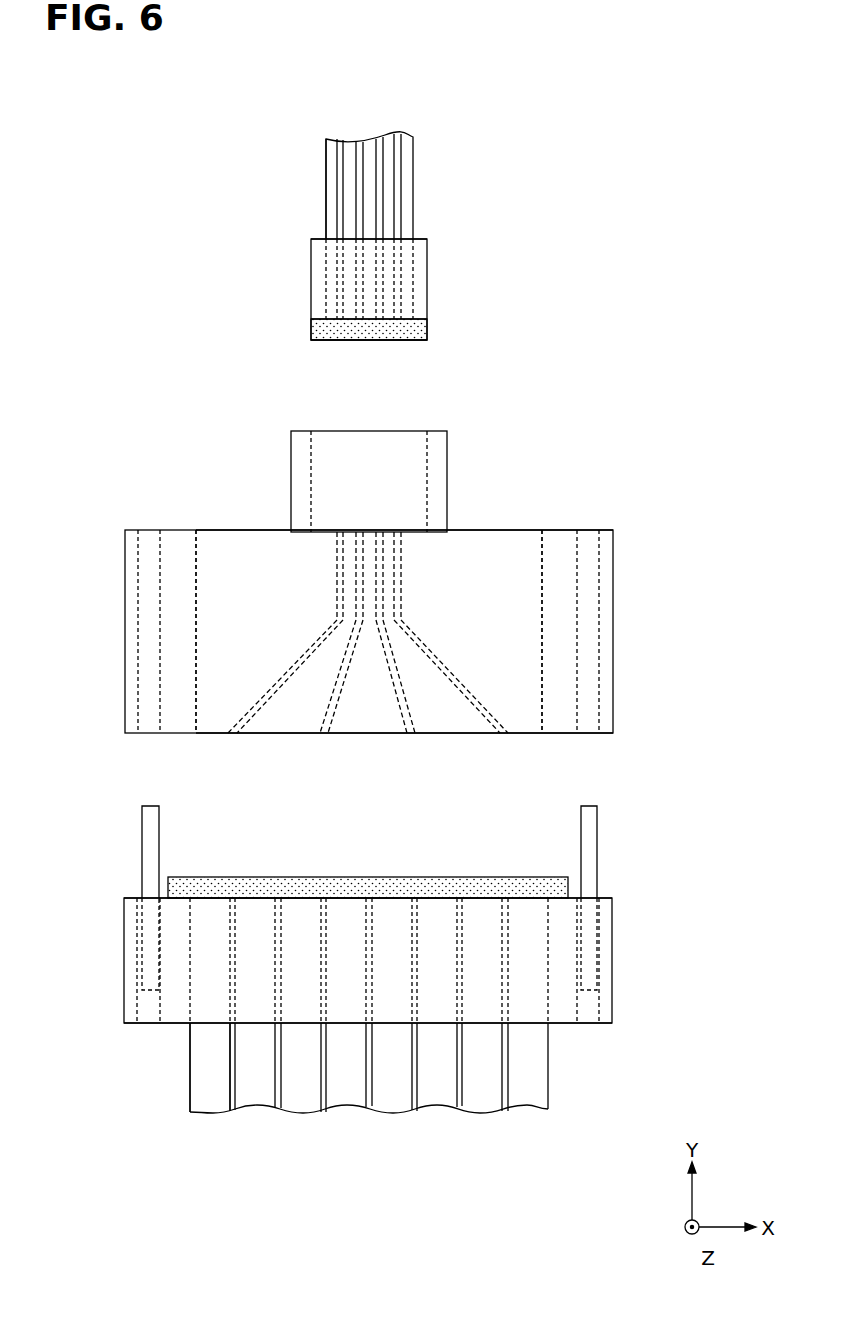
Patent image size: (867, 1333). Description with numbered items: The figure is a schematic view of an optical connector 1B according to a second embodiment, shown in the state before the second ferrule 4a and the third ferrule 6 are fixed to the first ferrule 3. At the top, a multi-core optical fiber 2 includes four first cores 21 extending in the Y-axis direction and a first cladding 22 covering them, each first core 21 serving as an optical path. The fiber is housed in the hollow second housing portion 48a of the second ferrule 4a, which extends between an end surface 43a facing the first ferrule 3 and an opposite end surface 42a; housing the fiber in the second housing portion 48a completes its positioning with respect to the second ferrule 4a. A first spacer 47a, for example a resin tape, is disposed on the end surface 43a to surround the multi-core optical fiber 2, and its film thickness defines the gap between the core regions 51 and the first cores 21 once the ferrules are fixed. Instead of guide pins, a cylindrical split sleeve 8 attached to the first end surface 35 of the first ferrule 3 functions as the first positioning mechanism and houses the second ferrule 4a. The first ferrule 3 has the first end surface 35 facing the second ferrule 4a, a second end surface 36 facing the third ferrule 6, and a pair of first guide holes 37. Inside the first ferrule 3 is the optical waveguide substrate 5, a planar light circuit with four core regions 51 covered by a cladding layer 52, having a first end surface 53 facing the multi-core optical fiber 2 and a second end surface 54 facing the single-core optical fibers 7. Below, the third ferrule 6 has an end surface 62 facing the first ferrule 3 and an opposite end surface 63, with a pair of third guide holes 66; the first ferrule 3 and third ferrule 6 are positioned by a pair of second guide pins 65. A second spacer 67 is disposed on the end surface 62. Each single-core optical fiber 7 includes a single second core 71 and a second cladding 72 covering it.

The optical connector 1B is at (176, 166).
The multi-core optical fiber 2 is at (416, 158).
The first core 21 is at (337, 157).
The first cladding 22 is at (386, 140).
The second ferrule 4a is at (430, 256).
The end surface 42a is at (311, 239).
The end surface 43a is at (318, 330).
The first spacer 47a is at (425, 330).
The second housing portion 48a is at (405, 290).
The sleeve 8 is at (437, 431).
The first ferrule 3 is at (616, 549).
The optical waveguide substrate 5 is at (230, 568).
The core region 51 is at (403, 560).
The cladding layer 52 is at (265, 563).
The first end surface 53 is at (487, 530).
The second end surface 54 is at (345, 733).
The first end surface 35 is at (557, 530).
The second end surface 36 is at (562, 733).
The first guide hole 37 is at (138, 623).
The third ferrule 6 is at (616, 920).
The end surface 62 is at (487, 898).
The end surface 63 is at (563, 1025).
The second guide pin 65 is at (142, 835).
The third guide hole 66 is at (135, 1002).
The second spacer 67 is at (368, 886).
The single-core optical fiber 7 is at (213, 1092).
The second core 71 is at (232, 1105).
The second cladding 72 is at (200, 1064).